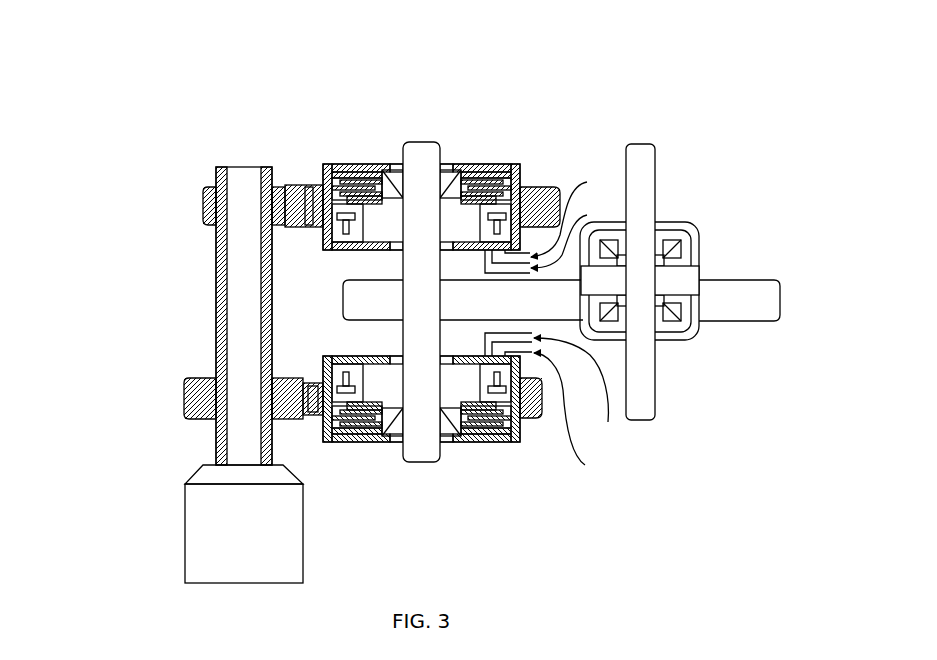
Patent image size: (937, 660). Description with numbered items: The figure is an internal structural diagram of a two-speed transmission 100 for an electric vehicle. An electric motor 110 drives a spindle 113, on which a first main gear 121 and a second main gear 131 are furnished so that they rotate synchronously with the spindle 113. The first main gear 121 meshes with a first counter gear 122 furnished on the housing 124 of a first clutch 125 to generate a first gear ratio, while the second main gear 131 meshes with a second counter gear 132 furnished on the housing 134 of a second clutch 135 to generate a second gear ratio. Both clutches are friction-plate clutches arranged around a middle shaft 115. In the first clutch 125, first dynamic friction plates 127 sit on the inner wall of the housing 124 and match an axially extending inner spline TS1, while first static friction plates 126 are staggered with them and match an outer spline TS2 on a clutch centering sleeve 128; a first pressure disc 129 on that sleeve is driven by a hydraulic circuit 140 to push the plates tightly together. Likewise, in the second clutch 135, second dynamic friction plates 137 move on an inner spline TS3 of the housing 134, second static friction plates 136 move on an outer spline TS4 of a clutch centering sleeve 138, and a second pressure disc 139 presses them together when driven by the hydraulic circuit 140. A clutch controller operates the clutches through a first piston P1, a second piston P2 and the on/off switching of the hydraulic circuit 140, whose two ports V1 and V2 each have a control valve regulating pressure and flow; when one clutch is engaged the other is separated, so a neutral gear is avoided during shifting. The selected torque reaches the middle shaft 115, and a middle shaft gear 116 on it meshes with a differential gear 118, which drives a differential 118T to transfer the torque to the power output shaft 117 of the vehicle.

The two-speed transmission 100 is at (80, 73).
The electric motor 110 is at (212, 538).
The spindle 113 is at (238, 441).
The middle shaft 115 is at (410, 155).
The middle shaft gear 116 is at (352, 300).
The power output shaft 117 is at (638, 182).
The differential gear 118 is at (727, 297).
The differential 118T is at (686, 228).
The first main gear 121 is at (203, 400).
The first counter gear 122 is at (325, 443).
The housing of the first clutch 124 is at (365, 443).
The first clutch 125 is at (449, 449).
The first static friction plates 126 is at (467, 443).
The first dynamic friction plates 127 is at (505, 443).
The clutch centering sleeve 128 is at (455, 443).
The first pressure disc 129 is at (547, 442).
The second main gear 131 is at (203, 207).
The second counter gear 132 is at (300, 184).
The housing of the second clutch 134 is at (350, 164).
The second clutch 135 is at (447, 160).
The second static friction plates 136 is at (468, 164).
The second dynamic friction plates 137 is at (505, 164).
The clutch centering sleeve 138 is at (452, 164).
The second pressure disc 139 is at (547, 166).
The hydraulic circuit 140 is at (599, 322).
The port V1 is at (573, 321).
The port V2 is at (573, 326).
The first piston P1 is at (492, 339).
The second piston P2 is at (489, 265).
The inner spline TS1 is at (322, 392).
The outer spline TS2 is at (387, 443).
The inner spline TS3 is at (312, 226).
The outer spline TS4 is at (380, 164).